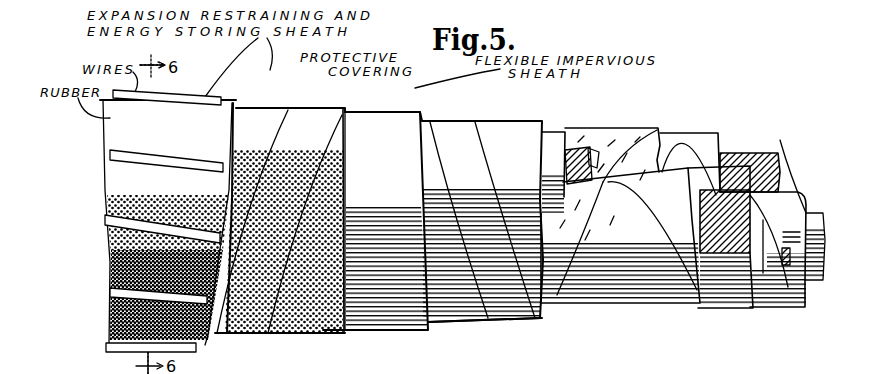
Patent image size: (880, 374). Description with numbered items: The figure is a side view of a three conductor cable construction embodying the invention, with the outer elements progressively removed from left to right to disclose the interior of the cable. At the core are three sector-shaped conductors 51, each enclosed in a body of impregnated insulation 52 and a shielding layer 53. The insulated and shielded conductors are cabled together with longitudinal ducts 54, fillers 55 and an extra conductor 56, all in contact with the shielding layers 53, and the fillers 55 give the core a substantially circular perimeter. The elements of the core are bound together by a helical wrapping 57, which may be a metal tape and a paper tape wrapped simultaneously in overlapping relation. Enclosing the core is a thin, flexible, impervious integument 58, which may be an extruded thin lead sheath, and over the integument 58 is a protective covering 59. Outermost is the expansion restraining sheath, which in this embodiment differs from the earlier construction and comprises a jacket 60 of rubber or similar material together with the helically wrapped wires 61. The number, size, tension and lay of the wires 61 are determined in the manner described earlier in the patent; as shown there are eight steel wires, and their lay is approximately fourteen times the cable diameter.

The conductor 51 is at (725, 190).
The impregnated insulation 52 is at (695, 138).
The shielding layer 53 is at (642, 137).
The longitudinal duct 54 is at (587, 147).
The filler 55 is at (552, 140).
The extra conductor 56 is at (777, 306).
The helical wrapping 57 is at (512, 322).
The flexible impervious integument 58 is at (388, 122).
The protective covering 59 is at (308, 120).
The jacket 60 is at (240, 118).
The helically wrapped wires 61 is at (110, 168).